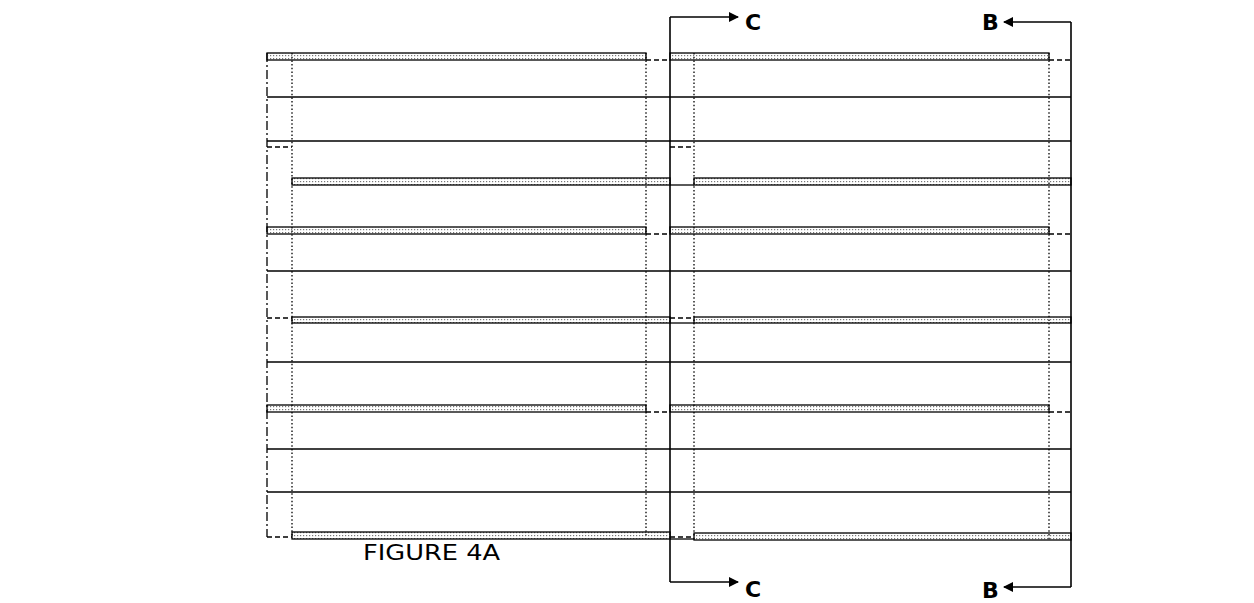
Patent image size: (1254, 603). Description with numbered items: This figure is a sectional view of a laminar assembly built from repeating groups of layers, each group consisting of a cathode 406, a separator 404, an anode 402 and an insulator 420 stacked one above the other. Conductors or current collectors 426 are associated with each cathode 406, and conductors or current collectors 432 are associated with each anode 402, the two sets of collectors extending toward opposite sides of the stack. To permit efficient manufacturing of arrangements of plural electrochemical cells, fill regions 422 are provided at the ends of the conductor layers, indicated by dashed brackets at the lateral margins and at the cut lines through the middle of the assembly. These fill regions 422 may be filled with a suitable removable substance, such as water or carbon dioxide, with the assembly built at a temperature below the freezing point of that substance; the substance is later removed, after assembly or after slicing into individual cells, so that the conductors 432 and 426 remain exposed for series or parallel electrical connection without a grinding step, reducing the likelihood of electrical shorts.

The anode 402 is at (669, 339).
The separator 404 is at (669, 301).
The cathode 406 is at (669, 259).
The insulator 420 is at (669, 291).
The fill region 422 is at (280, 150).
The current collector 426 is at (267, 54).
The current collector 432 is at (1071, 178).